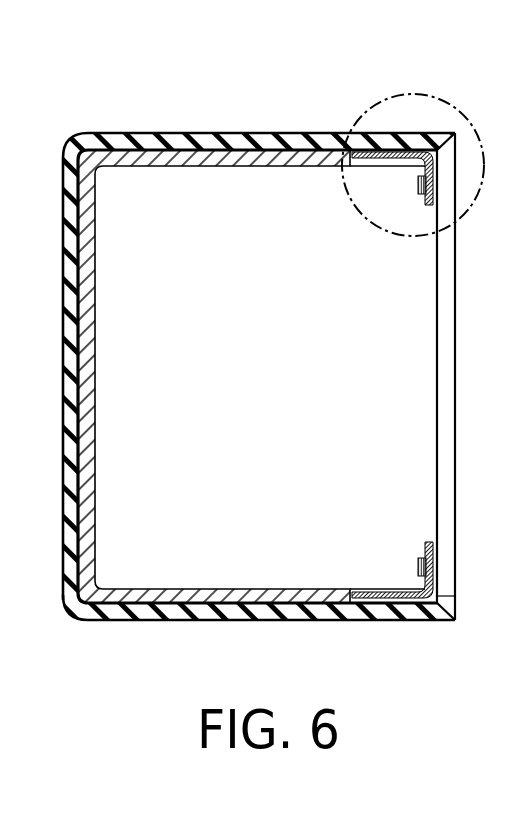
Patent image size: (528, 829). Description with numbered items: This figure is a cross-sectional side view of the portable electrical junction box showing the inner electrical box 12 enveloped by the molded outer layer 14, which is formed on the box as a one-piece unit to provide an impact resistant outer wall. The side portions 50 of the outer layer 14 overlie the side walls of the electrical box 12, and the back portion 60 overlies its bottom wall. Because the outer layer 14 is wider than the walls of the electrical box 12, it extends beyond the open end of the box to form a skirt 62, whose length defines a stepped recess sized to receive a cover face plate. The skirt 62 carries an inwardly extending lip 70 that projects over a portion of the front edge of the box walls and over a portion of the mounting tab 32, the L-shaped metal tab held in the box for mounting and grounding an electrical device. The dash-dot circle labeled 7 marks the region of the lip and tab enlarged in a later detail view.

The detail region shown in FIG. 7 is at (378, 103).
The electrical box 12 is at (218, 176).
The outer layer 14 is at (188, 624).
The mounting tab 32 is at (408, 545).
The side portions 50 is at (320, 621).
The back portion 60 is at (58, 185).
The skirt 62 is at (455, 620).
The inwardly extending lip 70 is at (447, 595).